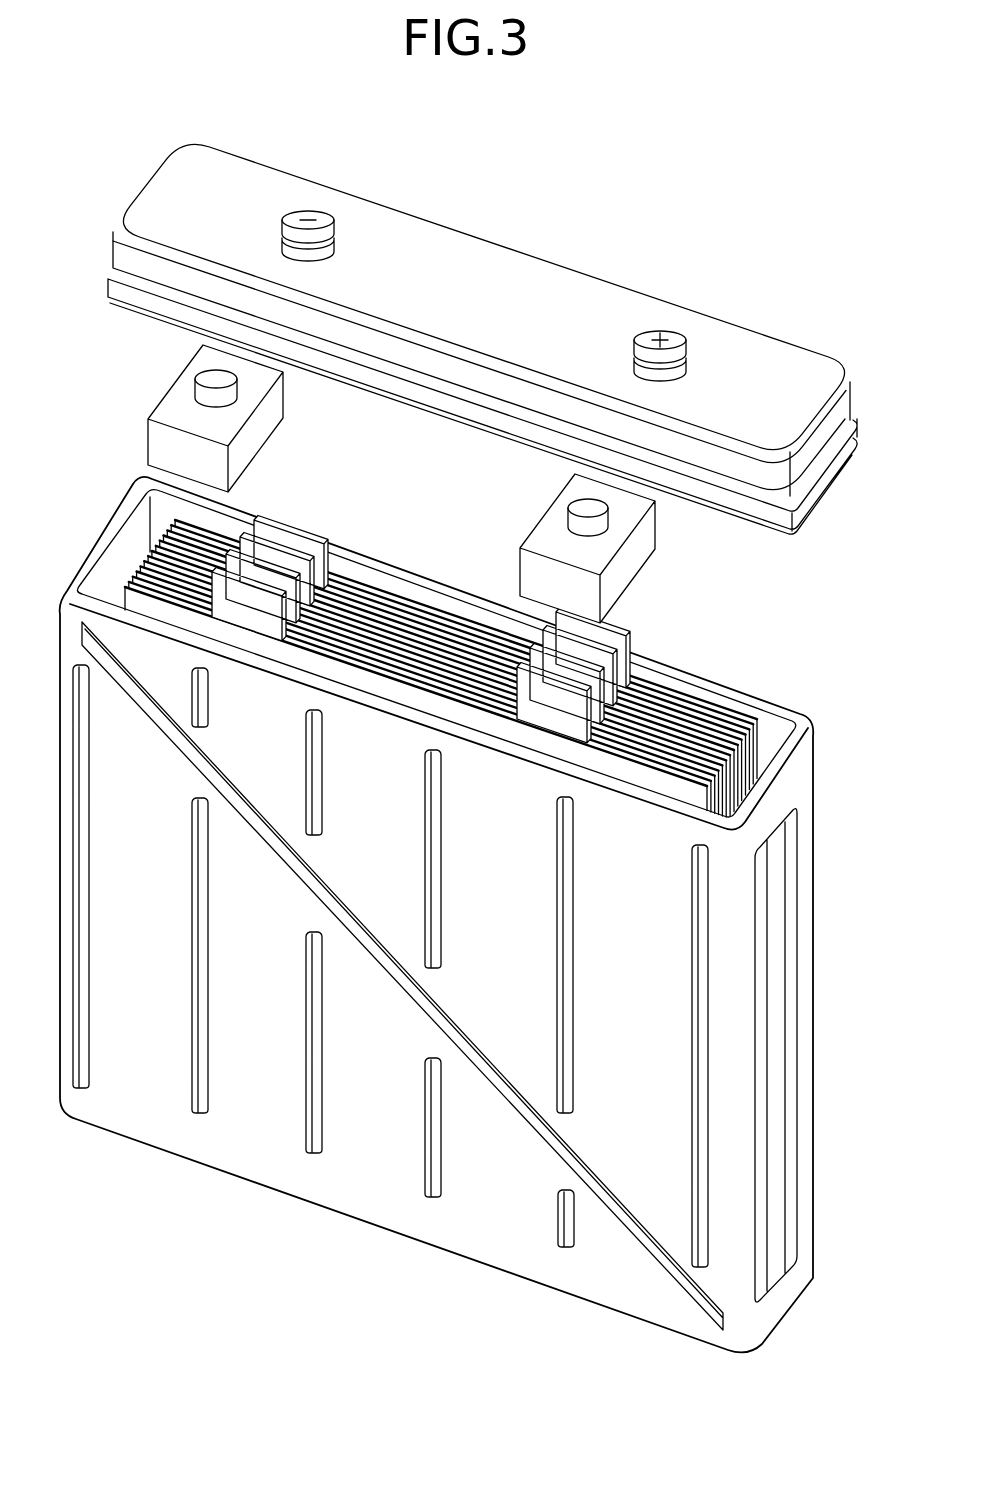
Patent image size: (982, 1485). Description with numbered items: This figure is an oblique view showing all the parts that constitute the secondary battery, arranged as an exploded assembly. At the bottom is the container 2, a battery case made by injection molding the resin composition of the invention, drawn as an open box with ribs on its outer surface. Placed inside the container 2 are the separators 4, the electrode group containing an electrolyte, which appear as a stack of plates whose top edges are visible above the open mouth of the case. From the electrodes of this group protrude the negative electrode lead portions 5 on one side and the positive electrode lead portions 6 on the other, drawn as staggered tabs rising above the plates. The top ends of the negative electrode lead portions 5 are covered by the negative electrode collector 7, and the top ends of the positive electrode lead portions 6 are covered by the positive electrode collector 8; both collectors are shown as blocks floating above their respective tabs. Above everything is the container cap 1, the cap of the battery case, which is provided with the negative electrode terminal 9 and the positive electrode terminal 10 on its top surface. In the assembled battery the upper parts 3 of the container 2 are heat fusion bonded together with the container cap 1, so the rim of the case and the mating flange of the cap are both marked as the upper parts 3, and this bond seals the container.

The container cap 1 is at (560, 288).
The container 2 is at (233, 1143).
The upper parts 3 is at (833, 478).
The separators 4 is at (711, 730).
The negative electrode lead portions 5 is at (281, 543).
The positive electrode lead portions 6 is at (608, 625).
The negative electrode collector 7 is at (167, 388).
The positive electrode collector 8 is at (532, 525).
The negative electrode terminal 9 is at (318, 208).
The positive electrode terminal 10 is at (672, 326).